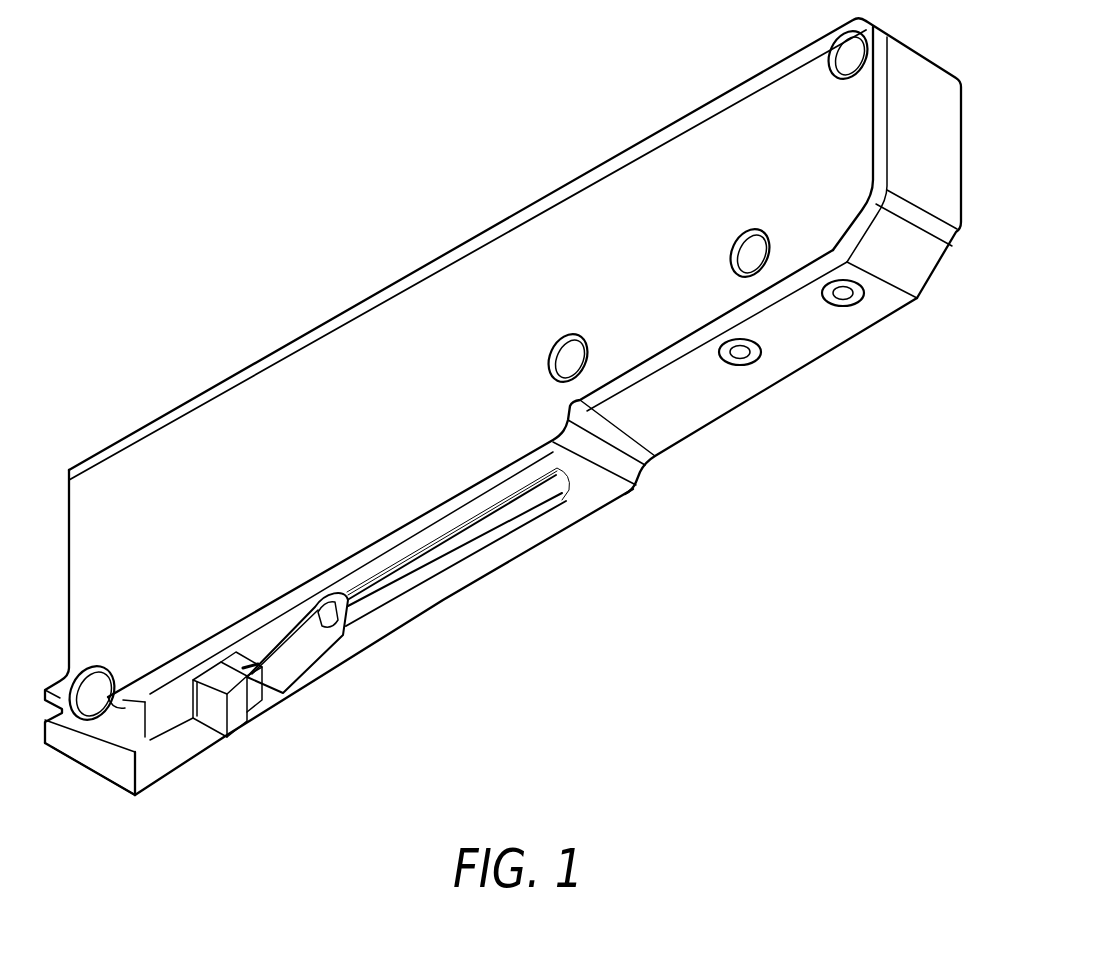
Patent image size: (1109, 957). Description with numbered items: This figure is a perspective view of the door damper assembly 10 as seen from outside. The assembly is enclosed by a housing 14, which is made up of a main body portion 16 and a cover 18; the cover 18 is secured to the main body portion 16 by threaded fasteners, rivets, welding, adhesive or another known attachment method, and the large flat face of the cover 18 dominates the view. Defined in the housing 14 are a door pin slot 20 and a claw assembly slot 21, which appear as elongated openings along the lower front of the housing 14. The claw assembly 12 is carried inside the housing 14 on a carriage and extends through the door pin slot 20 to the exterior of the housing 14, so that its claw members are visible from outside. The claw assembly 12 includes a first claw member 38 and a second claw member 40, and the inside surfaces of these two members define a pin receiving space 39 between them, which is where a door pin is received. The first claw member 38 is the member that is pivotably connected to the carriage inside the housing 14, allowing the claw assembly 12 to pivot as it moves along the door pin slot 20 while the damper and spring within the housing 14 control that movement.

The door damper assembly 10 is at (272, 221).
The claw assembly 12 is at (299, 731).
The housing 14 is at (683, 400).
The main body portion 16 is at (117, 763).
The cover 18 is at (423, 387).
The door pin slot 20 is at (395, 581).
The claw assembly slot 21 is at (490, 520).
The first claw member 38 is at (188, 738).
The pin receiving space 39 is at (245, 703).
The second claw member 40 is at (303, 650).